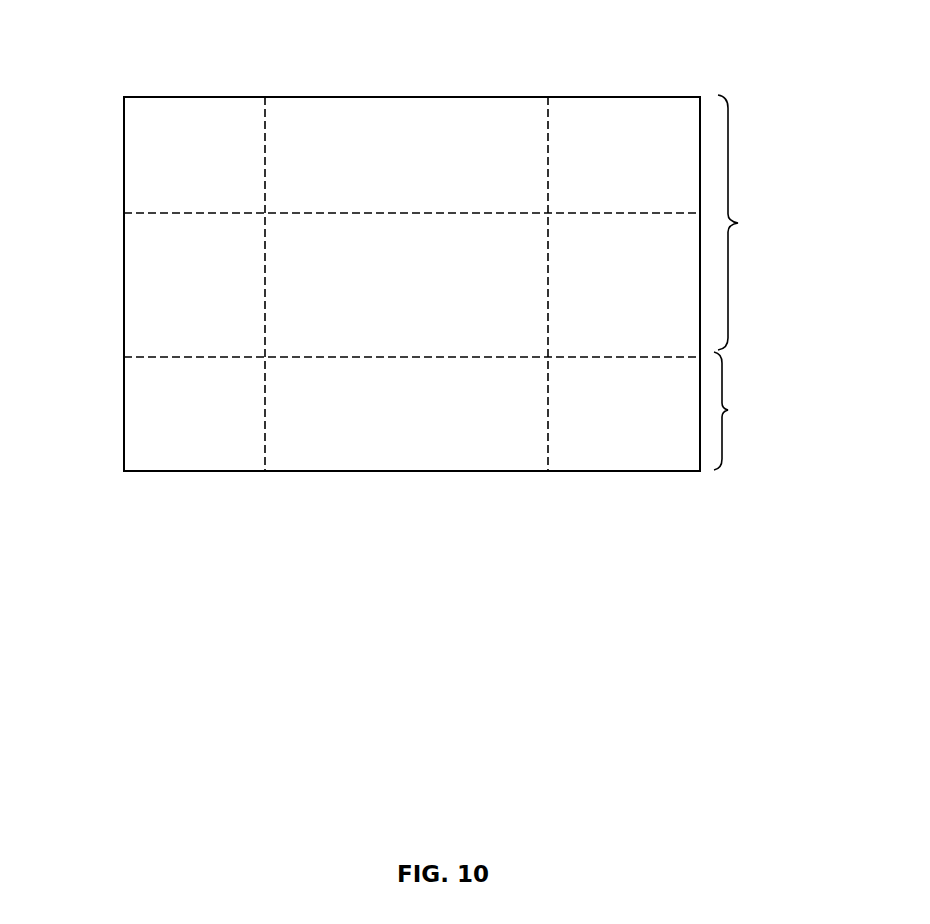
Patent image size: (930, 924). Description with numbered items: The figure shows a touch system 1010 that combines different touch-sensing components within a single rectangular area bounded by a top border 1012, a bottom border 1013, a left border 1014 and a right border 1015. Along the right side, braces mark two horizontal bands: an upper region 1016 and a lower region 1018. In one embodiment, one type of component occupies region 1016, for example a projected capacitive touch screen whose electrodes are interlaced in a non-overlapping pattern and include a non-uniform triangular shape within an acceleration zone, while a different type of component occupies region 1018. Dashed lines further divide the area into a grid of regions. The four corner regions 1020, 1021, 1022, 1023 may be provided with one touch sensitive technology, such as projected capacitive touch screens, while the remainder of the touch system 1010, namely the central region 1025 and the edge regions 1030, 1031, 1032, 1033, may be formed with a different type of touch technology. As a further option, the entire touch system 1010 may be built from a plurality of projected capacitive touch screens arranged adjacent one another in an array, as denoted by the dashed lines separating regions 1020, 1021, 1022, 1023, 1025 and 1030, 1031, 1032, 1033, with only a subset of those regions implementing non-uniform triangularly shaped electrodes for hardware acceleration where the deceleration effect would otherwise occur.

The touch system 1010 is at (121, 48).
The top border 1012 is at (380, 97).
The bottom border 1013 is at (430, 472).
The left border 1014 is at (122, 273).
The right border 1015 is at (701, 437).
The region 1016 is at (755, 222).
The region 1018 is at (767, 411).
The corner region 1020 is at (181, 169).
The corner region 1021 is at (599, 169).
The corner region 1022 is at (181, 418).
The corner region 1023 is at (599, 417).
The region 1025 is at (393, 299).
The region 1030 is at (393, 169).
The region 1031 is at (393, 417).
The region 1032 is at (181, 300).
The region 1033 is at (599, 299).